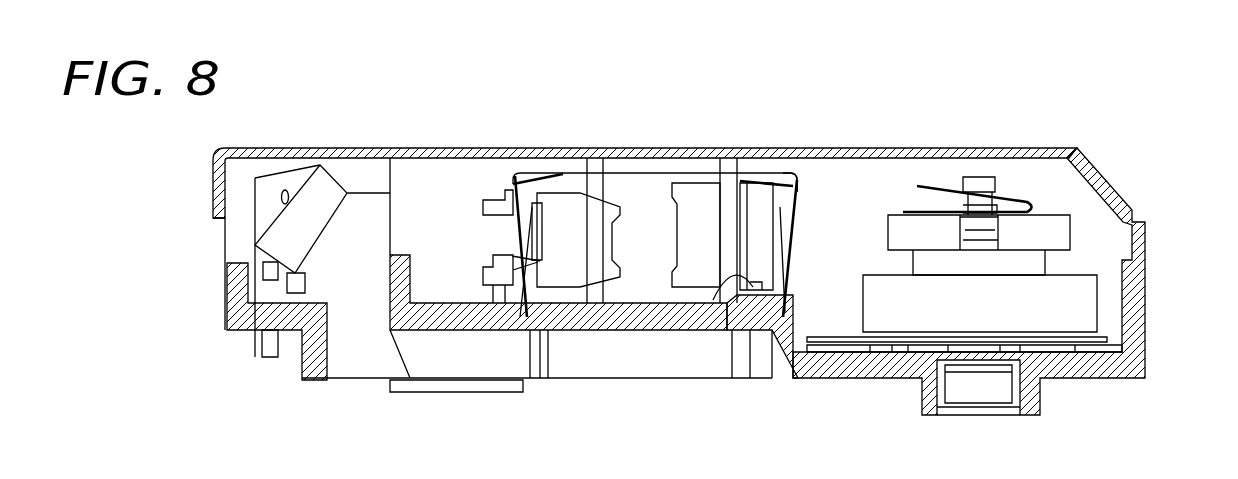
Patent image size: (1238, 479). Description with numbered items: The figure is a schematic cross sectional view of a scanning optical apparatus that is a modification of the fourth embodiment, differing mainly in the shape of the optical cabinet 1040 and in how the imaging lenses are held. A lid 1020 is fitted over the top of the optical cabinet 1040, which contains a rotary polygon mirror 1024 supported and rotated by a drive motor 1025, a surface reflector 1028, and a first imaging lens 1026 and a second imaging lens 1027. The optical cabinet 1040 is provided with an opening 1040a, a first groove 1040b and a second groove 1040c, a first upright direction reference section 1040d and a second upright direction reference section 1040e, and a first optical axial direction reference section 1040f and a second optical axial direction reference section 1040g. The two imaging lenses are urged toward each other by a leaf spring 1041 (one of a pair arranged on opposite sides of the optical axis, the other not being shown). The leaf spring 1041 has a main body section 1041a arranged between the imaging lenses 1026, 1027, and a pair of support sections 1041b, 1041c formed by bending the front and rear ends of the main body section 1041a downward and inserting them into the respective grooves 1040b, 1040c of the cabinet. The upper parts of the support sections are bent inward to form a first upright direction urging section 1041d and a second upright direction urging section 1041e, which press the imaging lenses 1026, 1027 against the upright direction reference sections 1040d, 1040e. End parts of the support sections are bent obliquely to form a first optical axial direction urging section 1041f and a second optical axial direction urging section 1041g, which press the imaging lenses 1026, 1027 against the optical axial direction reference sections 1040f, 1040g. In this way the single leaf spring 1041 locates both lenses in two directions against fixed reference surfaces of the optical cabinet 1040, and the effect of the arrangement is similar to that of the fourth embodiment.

The lid 1020 is at (973, 148).
The rotary polygon mirror 1024 is at (1050, 222).
The drive motor 1025 is at (1083, 307).
The first imaging lens 1026 is at (687, 275).
The second imaging lens 1027 is at (540, 330).
The surface reflector 1028 is at (307, 192).
The optical cabinet 1040 is at (1095, 365).
The opening 1040a is at (357, 360).
The first groove 1040b is at (778, 318).
The second groove 1040c is at (527, 303).
The first upright direction reference section 1040d is at (720, 275).
The second upright direction reference section 1040e is at (577, 290).
The first optical axial direction reference section 1040f is at (755, 210).
The second optical axial direction reference section 1040g is at (567, 190).
The leaf spring 1041 is at (665, 172).
The main body section 1041a is at (582, 215).
The support section 1041b is at (797, 190).
The support section 1041c is at (495, 190).
The first upright direction urging section 1041d is at (742, 202).
The second upright direction urging section 1041e is at (523, 174).
The first optical axial direction urging section 1041f is at (793, 257).
The second optical axial direction urging section 1041g is at (527, 237).